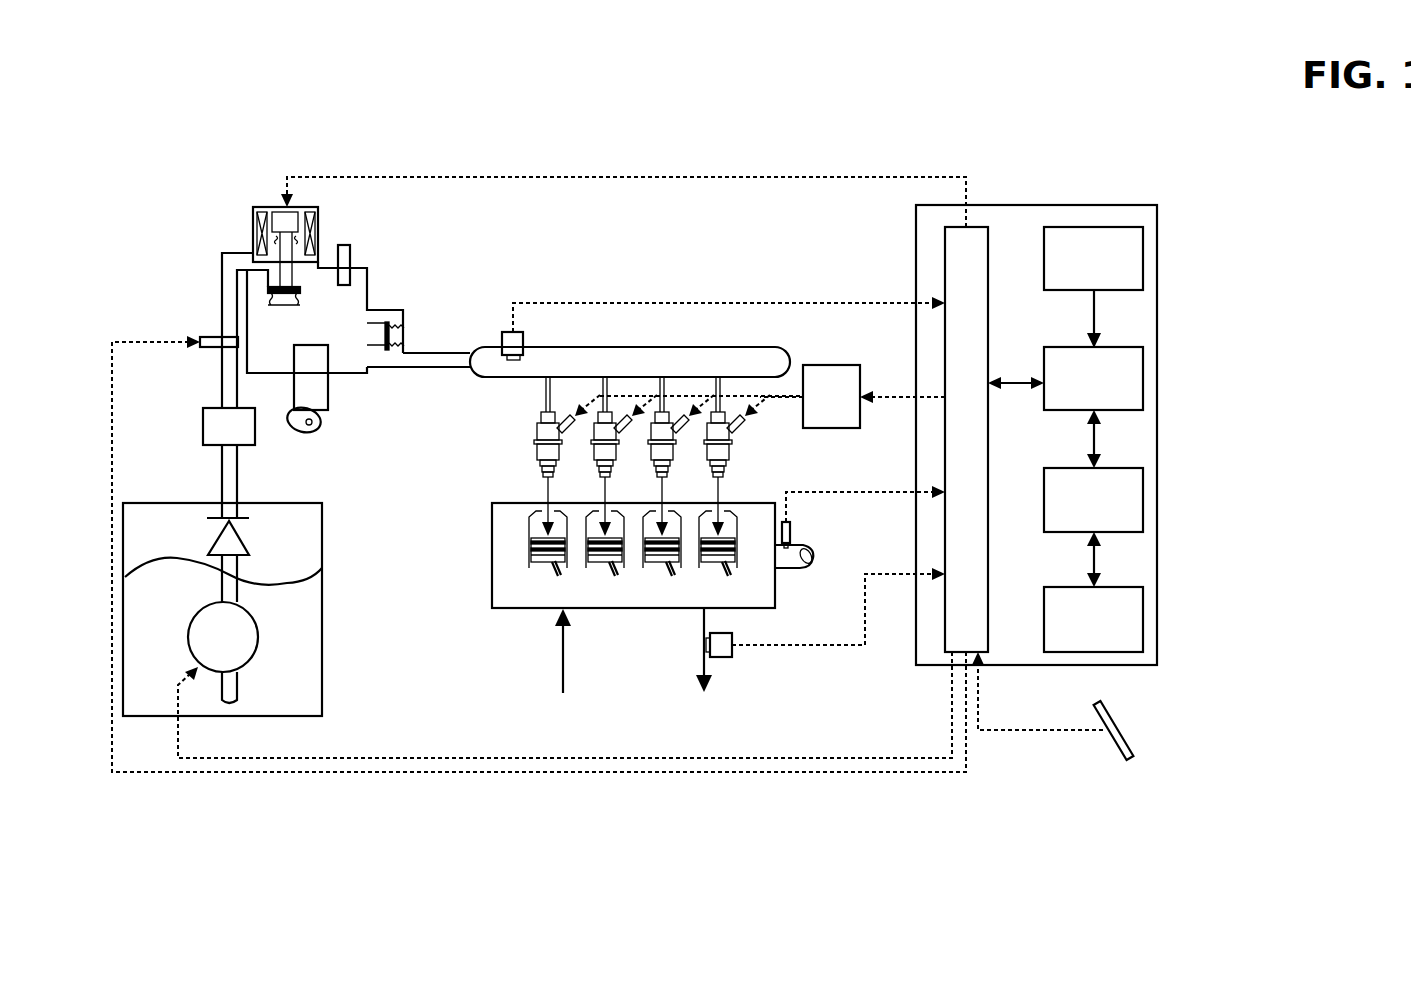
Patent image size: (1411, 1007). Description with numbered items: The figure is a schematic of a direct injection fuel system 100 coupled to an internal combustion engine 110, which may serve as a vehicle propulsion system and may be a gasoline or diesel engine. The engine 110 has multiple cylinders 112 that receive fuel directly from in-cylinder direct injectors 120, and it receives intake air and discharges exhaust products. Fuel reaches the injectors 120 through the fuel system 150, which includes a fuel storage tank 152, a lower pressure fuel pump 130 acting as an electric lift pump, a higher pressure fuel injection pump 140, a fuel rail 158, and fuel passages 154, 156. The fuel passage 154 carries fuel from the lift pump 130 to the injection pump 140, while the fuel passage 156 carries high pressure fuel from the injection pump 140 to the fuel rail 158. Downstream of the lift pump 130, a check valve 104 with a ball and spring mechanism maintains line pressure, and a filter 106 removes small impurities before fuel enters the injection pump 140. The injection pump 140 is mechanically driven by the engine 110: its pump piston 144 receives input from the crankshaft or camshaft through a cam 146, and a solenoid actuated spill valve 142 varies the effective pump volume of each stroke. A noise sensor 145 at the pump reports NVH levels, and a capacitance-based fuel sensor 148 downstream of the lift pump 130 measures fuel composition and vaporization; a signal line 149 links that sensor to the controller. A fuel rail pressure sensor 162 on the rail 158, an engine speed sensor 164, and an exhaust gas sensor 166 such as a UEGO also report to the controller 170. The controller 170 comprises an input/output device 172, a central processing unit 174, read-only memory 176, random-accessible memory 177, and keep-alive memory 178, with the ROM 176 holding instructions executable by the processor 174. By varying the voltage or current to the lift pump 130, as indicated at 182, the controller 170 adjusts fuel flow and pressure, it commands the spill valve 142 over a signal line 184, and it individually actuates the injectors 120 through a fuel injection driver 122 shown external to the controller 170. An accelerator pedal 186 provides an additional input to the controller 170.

The direct injection fuel system 100 is at (903, 142).
The check valve 104 is at (210, 542).
The filter 106 is at (229, 426).
The internal combustion engine 110 is at (492, 517).
The cylinders 112 is at (540, 533).
The in-cylinder direct injectors 120 is at (538, 428).
The fuel injection driver 122 is at (852, 396).
The lower pressure fuel pump 130 is at (189, 630).
The fuel injection pump 140 is at (370, 293).
The solenoid actuated spill valve 142 is at (318, 240).
The pump piston 144 is at (331, 402).
The noise sensor 145 is at (351, 257).
The cam 146 is at (322, 427).
The fuel sensor 148 is at (204, 336).
The signal line to low pressure sensor 149 is at (395, 773).
The fuel system 150 is at (80, 296).
The fuel storage tank 152 is at (322, 512).
The fuel passage 154 is at (240, 480).
The fuel passage 156 is at (427, 352).
The fuel rail 158 is at (786, 348).
The fuel rail pressure sensor 162 is at (526, 335).
The engine speed sensor 164 is at (791, 530).
The exhaust gas sensor 166 is at (734, 640).
The controller 170 is at (1158, 218).
The input/output device 172 is at (945, 642).
The central processing unit 174 is at (1145, 393).
The read-only memory 176 is at (1145, 265).
The random-accessible memory 177 is at (1145, 512).
The keep-alive memory 178 is at (1145, 632).
The lift pump control signal 182 is at (492, 757).
The signal line to solenoid valve 184 is at (640, 178).
The accelerator pedal 186 is at (1112, 712).